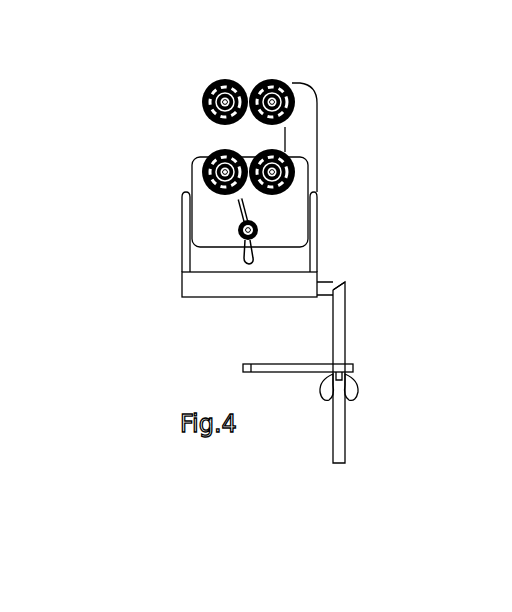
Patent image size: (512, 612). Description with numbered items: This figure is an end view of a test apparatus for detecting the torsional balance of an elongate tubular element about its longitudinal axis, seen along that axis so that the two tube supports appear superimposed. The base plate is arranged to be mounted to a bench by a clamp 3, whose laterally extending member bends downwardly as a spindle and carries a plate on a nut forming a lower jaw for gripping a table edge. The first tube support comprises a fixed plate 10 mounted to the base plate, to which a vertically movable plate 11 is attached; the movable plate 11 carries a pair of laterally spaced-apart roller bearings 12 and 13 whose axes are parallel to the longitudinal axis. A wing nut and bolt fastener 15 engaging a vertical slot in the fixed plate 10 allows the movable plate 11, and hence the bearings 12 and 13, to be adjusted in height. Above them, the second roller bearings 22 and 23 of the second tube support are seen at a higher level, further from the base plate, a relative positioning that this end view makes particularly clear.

The clamp 3 is at (295, 372).
The fixed plate 10 is at (296, 262).
The movable plate 11 is at (295, 225).
The roller bearing 12 is at (285, 152).
The roller bearing 13 is at (207, 152).
The wing nut and bolt fastener 15 is at (240, 208).
The roller bearing 22 is at (282, 78).
The roller bearing 23 is at (212, 80).